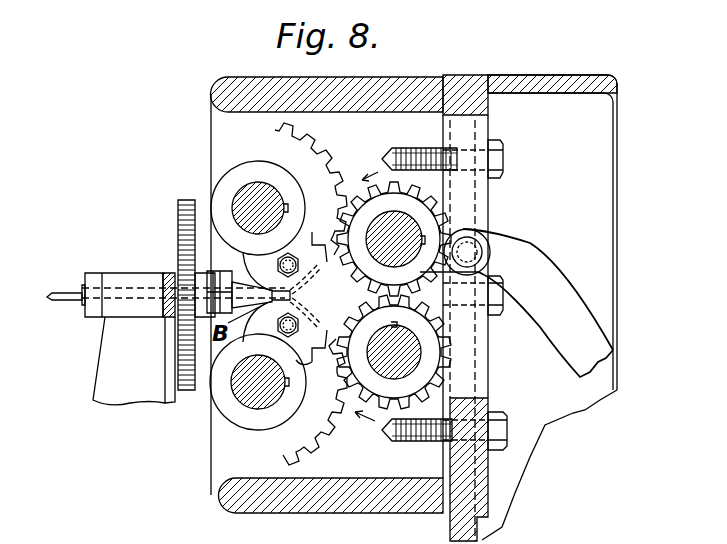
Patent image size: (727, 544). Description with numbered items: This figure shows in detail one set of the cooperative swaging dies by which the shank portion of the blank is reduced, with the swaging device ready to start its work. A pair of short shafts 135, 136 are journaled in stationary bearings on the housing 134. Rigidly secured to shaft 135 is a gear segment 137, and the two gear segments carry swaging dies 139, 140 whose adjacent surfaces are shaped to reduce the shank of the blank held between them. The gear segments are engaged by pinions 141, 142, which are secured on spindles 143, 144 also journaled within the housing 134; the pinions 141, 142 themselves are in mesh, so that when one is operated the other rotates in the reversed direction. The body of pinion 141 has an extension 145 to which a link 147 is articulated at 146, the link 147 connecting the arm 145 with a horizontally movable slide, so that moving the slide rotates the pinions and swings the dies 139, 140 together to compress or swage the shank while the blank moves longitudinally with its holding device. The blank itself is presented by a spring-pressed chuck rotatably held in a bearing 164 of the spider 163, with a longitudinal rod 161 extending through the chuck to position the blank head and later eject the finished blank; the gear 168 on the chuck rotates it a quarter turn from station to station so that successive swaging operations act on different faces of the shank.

The housing 134 is at (607, 150).
The short shaft 135 is at (250, 203).
The short shaft 136 is at (237, 393).
The gear segment 137 is at (308, 165).
The swaging die 139 is at (333, 275).
The swaging die 140 is at (335, 310).
The pinion 141 is at (400, 203).
The pinion 142 is at (453, 362).
The spindle 143 is at (398, 217).
The spindle 144 is at (390, 373).
The extension 145 is at (445, 223).
The articulation 146 is at (468, 252).
The link 147 is at (562, 297).
The longitudinal rod 161 is at (58, 290).
The spider 163 is at (110, 360).
The bearing 164 is at (140, 267).
The gear 168 is at (178, 222).